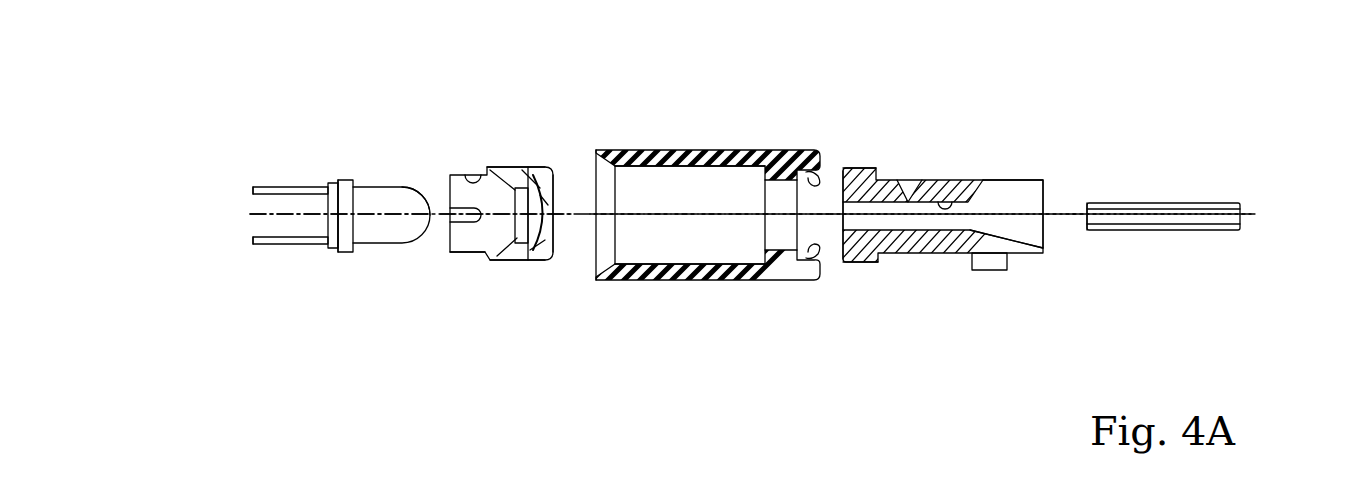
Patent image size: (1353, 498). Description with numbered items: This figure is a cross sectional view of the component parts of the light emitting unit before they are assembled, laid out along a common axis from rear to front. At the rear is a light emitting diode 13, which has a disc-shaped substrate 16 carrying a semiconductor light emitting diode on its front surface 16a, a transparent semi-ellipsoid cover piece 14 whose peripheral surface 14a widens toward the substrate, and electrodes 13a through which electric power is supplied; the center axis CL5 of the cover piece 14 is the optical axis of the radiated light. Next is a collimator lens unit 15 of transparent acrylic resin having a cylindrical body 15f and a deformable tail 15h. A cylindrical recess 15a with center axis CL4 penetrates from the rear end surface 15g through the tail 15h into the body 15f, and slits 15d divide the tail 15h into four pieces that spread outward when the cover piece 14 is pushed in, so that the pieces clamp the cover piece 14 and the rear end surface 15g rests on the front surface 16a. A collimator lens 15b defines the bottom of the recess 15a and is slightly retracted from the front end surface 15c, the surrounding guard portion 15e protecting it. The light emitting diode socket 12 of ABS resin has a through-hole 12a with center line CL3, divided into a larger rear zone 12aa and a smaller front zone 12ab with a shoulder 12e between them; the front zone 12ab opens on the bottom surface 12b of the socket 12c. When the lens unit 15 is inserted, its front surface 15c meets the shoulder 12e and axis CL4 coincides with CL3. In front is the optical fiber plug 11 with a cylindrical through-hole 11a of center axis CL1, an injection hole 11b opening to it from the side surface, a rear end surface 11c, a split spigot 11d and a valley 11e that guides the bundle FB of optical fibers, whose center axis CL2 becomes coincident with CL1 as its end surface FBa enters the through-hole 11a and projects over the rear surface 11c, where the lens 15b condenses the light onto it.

The optical fiber plug 11 is at (947, 263).
The cylindrical through-hole 11a is at (946, 206).
The injection hole 11b is at (912, 192).
The rear end surface 11c is at (838, 262).
The spigot 11d is at (850, 168).
The valley 11e is at (1012, 200).
The light emitting diode socket 12 is at (657, 286).
The through-hole 12a is at (667, 200).
The rear zone 12aa is at (706, 168).
The front zone 12ab is at (768, 185).
The bottom surface 12b is at (805, 180).
The socket 12c is at (826, 172).
The shoulder 12e is at (738, 266).
The light emitting diode 13 is at (340, 257).
The electrode 13a is at (262, 187).
The semi-ellipsoid cover piece 14 is at (404, 226).
The peripheral surface 14a is at (370, 187).
The collimator lens unit 15 is at (500, 268).
The cylindrical recess 15a is at (488, 167).
The collimator lens 15b is at (560, 170).
The front end surface 15c is at (554, 250).
The slit 15d is at (465, 176).
The guard portion 15e is at (556, 170).
The cylindrical body 15f is at (525, 262).
The rear end surface 15g is at (450, 213).
The deformable tail 15h is at (462, 253).
The disc-shaped substrate 16 is at (345, 180).
The front surface 16a is at (358, 180).
The bundle of optical fibers FB is at (1165, 231).
The end surface FBa is at (1087, 205).
The center axis CL1 is at (1066, 212).
The center axis CL2 is at (1252, 214).
The center line CL3 is at (715, 216).
The center axis CL4 is at (530, 216).
The center axis CL5 is at (285, 215).